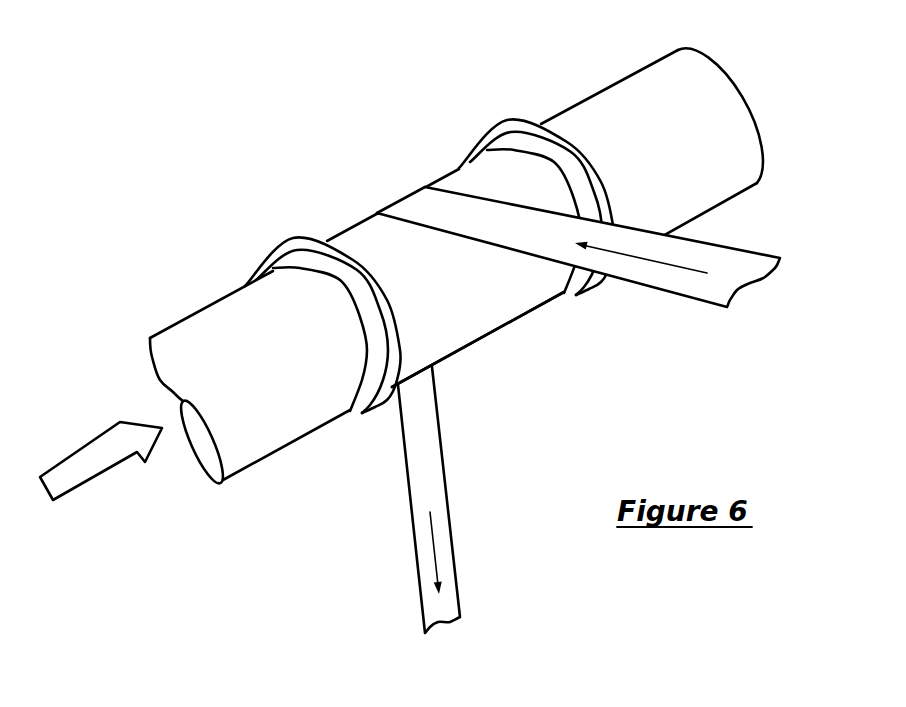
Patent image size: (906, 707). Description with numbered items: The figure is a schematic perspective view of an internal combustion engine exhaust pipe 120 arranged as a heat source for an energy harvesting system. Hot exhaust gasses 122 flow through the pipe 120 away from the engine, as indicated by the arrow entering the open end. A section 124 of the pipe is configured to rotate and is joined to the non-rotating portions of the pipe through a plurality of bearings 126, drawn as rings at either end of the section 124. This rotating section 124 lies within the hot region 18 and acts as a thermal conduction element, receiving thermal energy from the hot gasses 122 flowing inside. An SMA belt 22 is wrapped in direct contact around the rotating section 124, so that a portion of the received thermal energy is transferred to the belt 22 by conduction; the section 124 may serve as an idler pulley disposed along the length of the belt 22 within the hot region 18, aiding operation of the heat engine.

The hot region 18 is at (504, 329).
The SMA belt 22 is at (730, 247).
The exhaust pipe 120 is at (263, 463).
The hot exhaust gasses 122 is at (57, 467).
The rotating section 124 is at (518, 317).
The bearings 126 is at (292, 237).